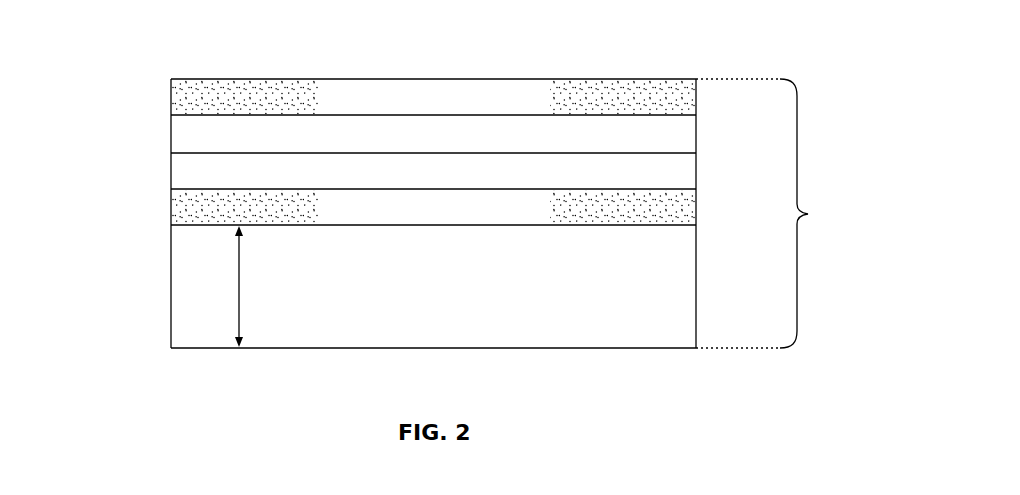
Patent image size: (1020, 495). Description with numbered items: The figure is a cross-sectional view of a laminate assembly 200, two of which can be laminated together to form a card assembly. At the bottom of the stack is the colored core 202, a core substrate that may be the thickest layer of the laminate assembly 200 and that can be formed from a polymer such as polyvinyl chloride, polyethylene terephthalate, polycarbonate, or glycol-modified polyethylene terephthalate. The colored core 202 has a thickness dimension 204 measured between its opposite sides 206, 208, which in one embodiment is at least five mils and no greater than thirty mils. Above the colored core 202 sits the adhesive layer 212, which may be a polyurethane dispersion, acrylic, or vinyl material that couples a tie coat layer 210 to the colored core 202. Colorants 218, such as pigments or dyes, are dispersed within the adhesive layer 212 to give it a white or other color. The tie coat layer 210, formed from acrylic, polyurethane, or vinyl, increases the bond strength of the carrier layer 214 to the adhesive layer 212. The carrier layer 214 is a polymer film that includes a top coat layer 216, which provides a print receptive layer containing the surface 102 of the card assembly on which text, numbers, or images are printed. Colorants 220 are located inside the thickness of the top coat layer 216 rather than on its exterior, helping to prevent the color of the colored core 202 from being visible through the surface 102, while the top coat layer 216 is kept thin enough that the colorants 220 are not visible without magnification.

The surface 102 is at (609, 74).
The laminate assembly 200 is at (773, 213).
The colored core 202 is at (658, 334).
The thickness dimension 204 is at (241, 287).
The side of the colored core 206 is at (191, 214).
The side of the colored core 208 is at (192, 357).
The tie coat layer 210 is at (686, 171).
The adhesive layer 212 is at (686, 207).
The carrier layer 214 is at (180, 135).
The top coat layer 216 is at (180, 97).
The colorants 218 is at (640, 200).
The colorants 220 is at (267, 84).